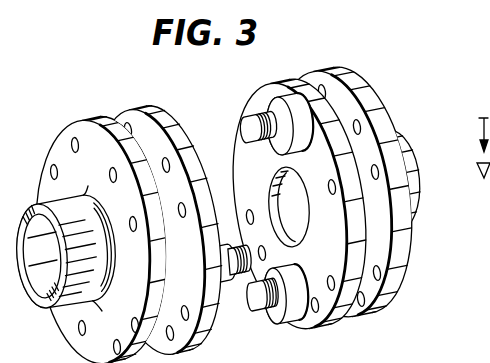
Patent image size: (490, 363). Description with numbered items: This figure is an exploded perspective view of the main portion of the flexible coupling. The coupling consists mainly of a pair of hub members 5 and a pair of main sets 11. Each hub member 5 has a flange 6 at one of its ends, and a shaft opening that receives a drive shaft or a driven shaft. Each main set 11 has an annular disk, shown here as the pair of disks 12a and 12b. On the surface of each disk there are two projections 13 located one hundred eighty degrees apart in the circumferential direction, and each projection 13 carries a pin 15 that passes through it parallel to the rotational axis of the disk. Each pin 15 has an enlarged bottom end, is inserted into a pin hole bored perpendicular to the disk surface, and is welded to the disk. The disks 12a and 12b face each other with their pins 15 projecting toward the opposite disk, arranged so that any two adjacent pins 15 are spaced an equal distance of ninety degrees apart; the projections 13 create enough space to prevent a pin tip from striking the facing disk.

The hub member 5 is at (402, 138).
The flange 6 is at (80, 121).
The main set 11 is at (175, 97).
The disk 12a is at (145, 110).
The disk 12b is at (263, 90).
The projection 13 is at (221, 284).
The pin 15 is at (244, 130).